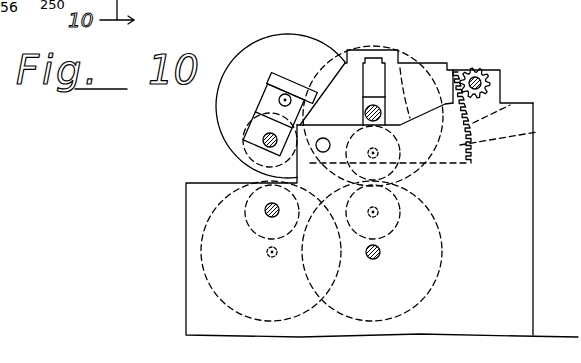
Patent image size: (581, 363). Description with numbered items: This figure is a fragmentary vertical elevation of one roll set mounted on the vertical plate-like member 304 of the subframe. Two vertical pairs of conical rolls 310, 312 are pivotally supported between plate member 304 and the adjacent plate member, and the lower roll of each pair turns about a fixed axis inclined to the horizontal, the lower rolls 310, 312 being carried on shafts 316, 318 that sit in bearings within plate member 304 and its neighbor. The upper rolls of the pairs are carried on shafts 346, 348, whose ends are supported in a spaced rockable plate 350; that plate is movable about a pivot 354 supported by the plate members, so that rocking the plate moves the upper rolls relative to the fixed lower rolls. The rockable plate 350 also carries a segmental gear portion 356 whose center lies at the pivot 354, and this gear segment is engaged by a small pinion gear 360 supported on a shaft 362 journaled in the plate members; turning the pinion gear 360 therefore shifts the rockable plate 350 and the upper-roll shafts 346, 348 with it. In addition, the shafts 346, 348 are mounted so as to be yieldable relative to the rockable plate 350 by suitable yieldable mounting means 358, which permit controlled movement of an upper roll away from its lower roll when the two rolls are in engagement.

The plate-like member 304 is at (192, 303).
The conical roll 310 is at (292, 38).
The conical roll 312 is at (316, 80).
The shaft 316 is at (372, 262).
The shaft 318 is at (264, 212).
The shaft 346 is at (387, 98).
The shaft 348 is at (263, 147).
The rockable plate 350 is at (515, 135).
The pivot 354 is at (326, 139).
The segmental gear portion 356 is at (508, 104).
The yieldable mounting means 358 is at (272, 115).
The pinion gear 360 is at (470, 68).
The shaft 362 is at (481, 82).